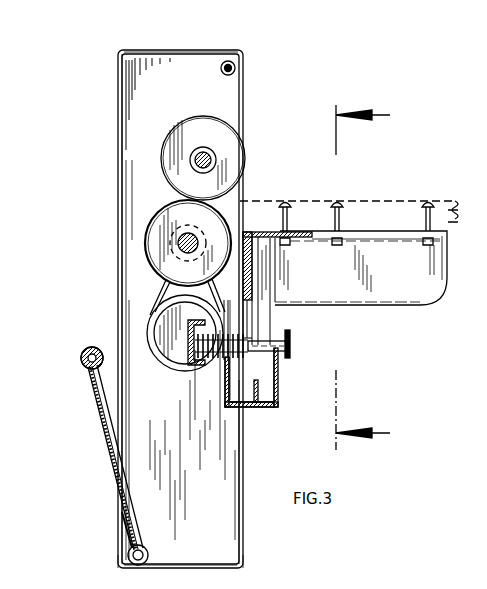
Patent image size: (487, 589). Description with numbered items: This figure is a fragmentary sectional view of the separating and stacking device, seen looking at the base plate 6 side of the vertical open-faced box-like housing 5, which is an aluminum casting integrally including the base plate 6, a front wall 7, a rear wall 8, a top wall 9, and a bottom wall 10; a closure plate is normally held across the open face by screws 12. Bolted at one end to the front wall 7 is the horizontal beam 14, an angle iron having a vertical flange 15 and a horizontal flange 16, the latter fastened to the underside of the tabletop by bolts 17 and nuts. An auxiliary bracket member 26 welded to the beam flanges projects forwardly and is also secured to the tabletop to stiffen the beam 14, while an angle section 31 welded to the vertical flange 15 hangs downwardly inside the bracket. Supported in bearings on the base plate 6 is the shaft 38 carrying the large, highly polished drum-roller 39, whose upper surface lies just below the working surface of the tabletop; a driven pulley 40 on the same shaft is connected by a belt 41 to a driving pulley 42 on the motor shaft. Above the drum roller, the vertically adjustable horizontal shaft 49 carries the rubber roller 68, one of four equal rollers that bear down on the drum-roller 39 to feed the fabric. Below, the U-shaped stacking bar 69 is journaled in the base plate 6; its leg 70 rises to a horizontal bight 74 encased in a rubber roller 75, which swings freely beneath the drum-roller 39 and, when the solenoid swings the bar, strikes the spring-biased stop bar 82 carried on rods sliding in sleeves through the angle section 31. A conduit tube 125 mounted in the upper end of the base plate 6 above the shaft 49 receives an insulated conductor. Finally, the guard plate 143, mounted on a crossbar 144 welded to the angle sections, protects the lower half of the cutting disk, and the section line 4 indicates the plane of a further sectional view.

The section line 4- 4 is at (370, 277).
The box-like housing 5 is at (117, 118).
The base plate 6 is at (131, 186).
The front wall 7 is at (245, 458).
The rear wall 8 is at (120, 282).
The top wall 9 is at (150, 58).
The bottom wall 10 is at (184, 568).
The screws 12 is at (88, 572).
The horizontal beam 14 is at (258, 232).
The vertical flange 15 is at (256, 270).
The horizontal flange 16 is at (300, 232).
The bolts 17 is at (320, 572).
The auxiliary bracket member 26 is at (435, 277).
The angle section 31 is at (275, 372).
The shaft 38 is at (178, 247).
The drum-roller 39 is at (160, 215).
The driven pulley 40 is at (145, 240).
The belt 41 is at (158, 298).
The driving pulley 42 is at (176, 367).
The horizontal shaft 49 is at (218, 161).
The rubber roller 68 is at (233, 138).
The stacking bar 69 is at (112, 482).
The leg 70 is at (102, 430).
The bight 74 is at (84, 361).
The rubber roller 75 is at (86, 349).
The stop bar 82 is at (190, 328).
The conduit tube 125 is at (237, 68).
The guard plate 143 is at (250, 405).
The crossbar 144 is at (258, 392).